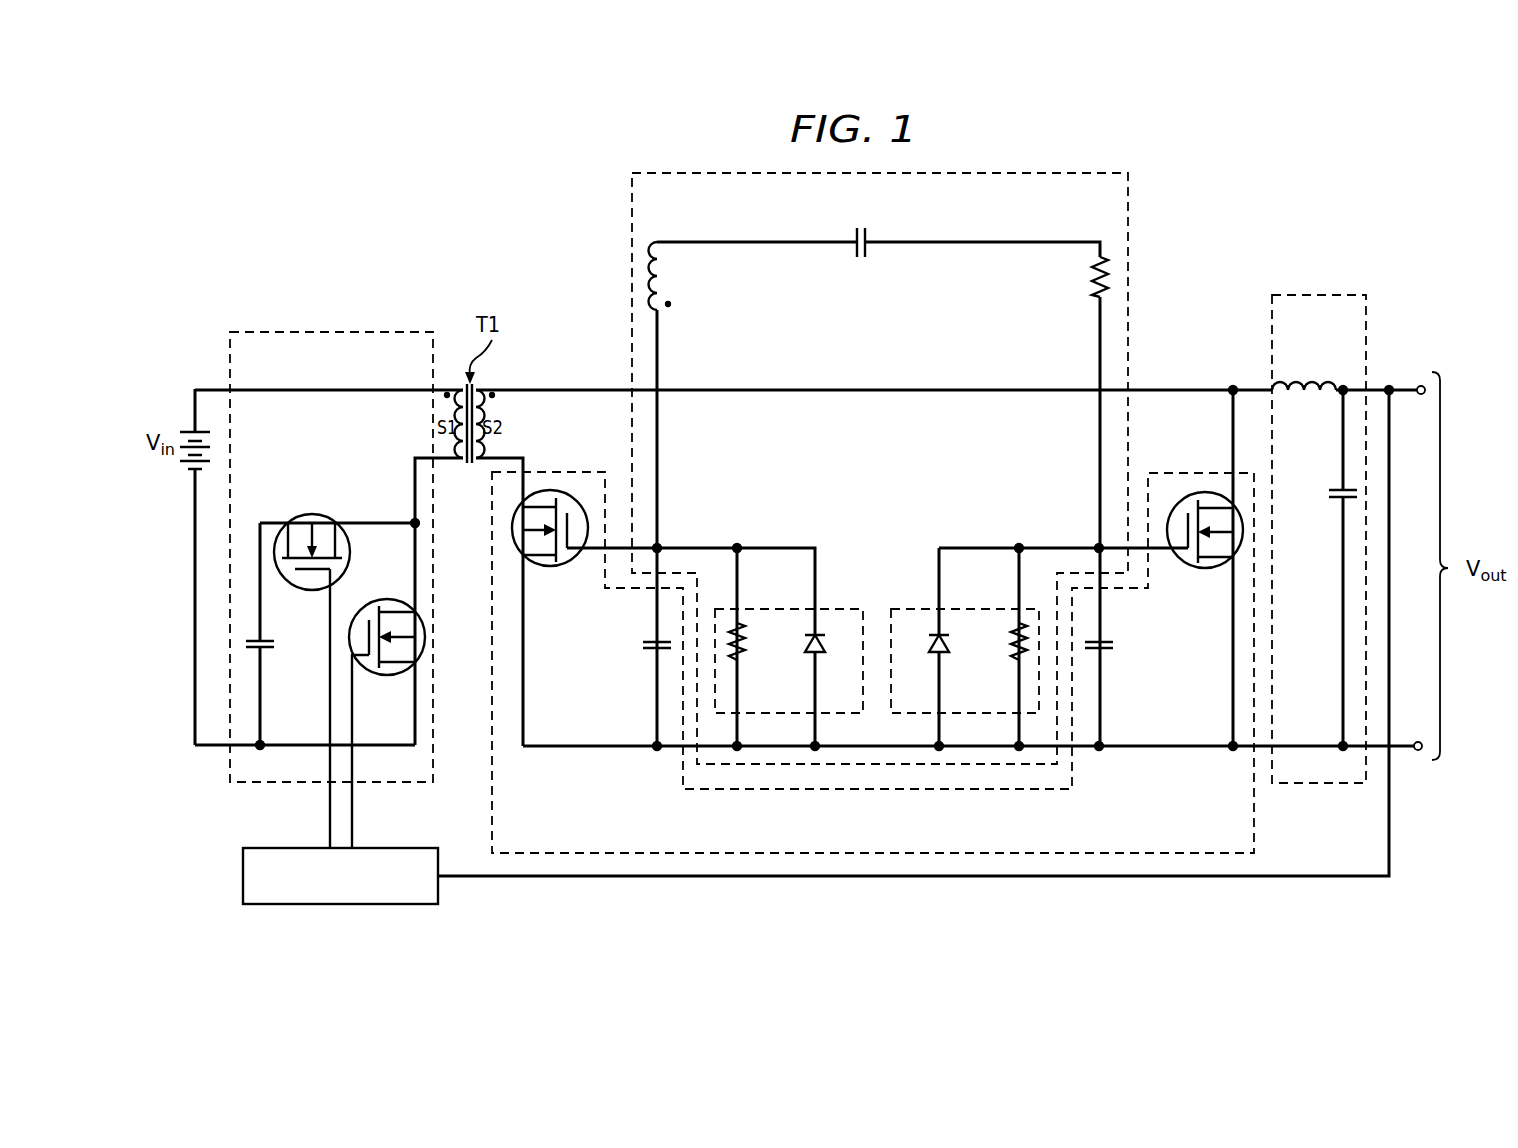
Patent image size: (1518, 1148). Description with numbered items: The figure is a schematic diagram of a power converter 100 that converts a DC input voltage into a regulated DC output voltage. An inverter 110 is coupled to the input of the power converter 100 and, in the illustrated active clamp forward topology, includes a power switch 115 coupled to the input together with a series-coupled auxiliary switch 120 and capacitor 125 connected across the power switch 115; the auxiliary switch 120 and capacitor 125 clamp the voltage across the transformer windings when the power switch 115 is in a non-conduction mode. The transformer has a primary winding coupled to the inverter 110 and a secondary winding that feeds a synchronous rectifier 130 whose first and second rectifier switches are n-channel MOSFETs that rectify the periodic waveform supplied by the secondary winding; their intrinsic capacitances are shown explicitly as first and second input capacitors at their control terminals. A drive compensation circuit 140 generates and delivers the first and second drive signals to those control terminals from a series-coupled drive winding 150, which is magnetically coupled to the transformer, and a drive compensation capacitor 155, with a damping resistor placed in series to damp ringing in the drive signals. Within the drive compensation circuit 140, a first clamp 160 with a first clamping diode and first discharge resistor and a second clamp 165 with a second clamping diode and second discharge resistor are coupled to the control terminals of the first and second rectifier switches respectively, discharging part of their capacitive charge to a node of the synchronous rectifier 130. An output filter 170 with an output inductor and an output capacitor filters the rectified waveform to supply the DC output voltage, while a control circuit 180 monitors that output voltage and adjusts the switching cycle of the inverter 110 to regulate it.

The power converter 100 is at (492, 237).
The inverter 110 is at (346, 554).
The power switch 115 is at (388, 602).
The auxiliary switch 120 is at (316, 512).
The capacitor 125 is at (268, 660).
The synchronous rectifier 130 is at (865, 620).
The drive compensation circuit 140 is at (914, 468).
The drive winding 150 is at (673, 278).
The drive compensation capacitor 155 is at (846, 252).
The first clamp 160 is at (846, 607).
The second clamp 165 is at (909, 607).
The output filter 170 is at (1271, 338).
The control circuit 180 is at (243, 877).